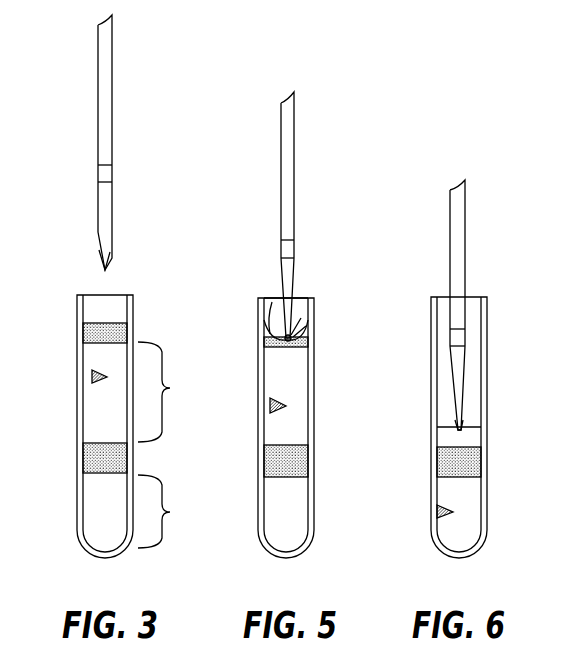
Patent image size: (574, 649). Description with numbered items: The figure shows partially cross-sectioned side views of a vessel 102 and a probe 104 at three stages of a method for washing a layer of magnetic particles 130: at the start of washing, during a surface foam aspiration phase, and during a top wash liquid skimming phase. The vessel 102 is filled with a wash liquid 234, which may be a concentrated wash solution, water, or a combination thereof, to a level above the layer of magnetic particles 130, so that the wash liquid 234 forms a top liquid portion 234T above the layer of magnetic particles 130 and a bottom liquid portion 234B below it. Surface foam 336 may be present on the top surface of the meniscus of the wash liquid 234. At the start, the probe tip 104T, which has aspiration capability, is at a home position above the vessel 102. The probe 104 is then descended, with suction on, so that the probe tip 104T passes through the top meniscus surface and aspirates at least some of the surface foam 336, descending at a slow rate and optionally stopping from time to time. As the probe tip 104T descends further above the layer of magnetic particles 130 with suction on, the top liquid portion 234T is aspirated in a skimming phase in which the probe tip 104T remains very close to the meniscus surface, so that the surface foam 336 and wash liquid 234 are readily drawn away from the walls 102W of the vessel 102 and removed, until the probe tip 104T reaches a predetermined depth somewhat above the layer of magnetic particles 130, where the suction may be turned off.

In FIG. 3, the vessel 102 is at (70, 502).
In FIG. 5, the vessel 102 is at (286, 428).
In FIG. 6, the vessel 102 is at (459, 427).
In FIG. 5, the walls of the vessel 102W is at (270, 296).
In FIG. 3, the probe 104 is at (112, 113).
In FIG. 5, the probe 104 is at (295, 187).
In FIG. 6, the probe 104 is at (467, 223).
In FIG. 3, the probe tip 104T is at (106, 270).
In FIG. 5, the probe tip 104T is at (291, 343).
In FIG. 6, the probe tip 104T is at (455, 432).
In FIG. 3, the layer of magnetic particles 130 is at (83, 462).
In FIG. 5, the layer of magnetic particles 130 is at (262, 462).
In FIG. 6, the layer of magnetic particles 130 is at (435, 463).
In FIG. 3, the wash liquid 234 is at (92, 376).
In FIG. 5, the wash liquid 234 is at (270, 405).
In FIG. 6, the wash liquid 234 is at (437, 511).
In FIG. 3, the top liquid portion 234T is at (170, 388).
In FIG. 3, the bottom liquid portion 234B is at (170, 512).
In FIG. 3, the surface foam 336 is at (83, 333).
In FIG. 5, the surface foam 336 is at (315, 302).